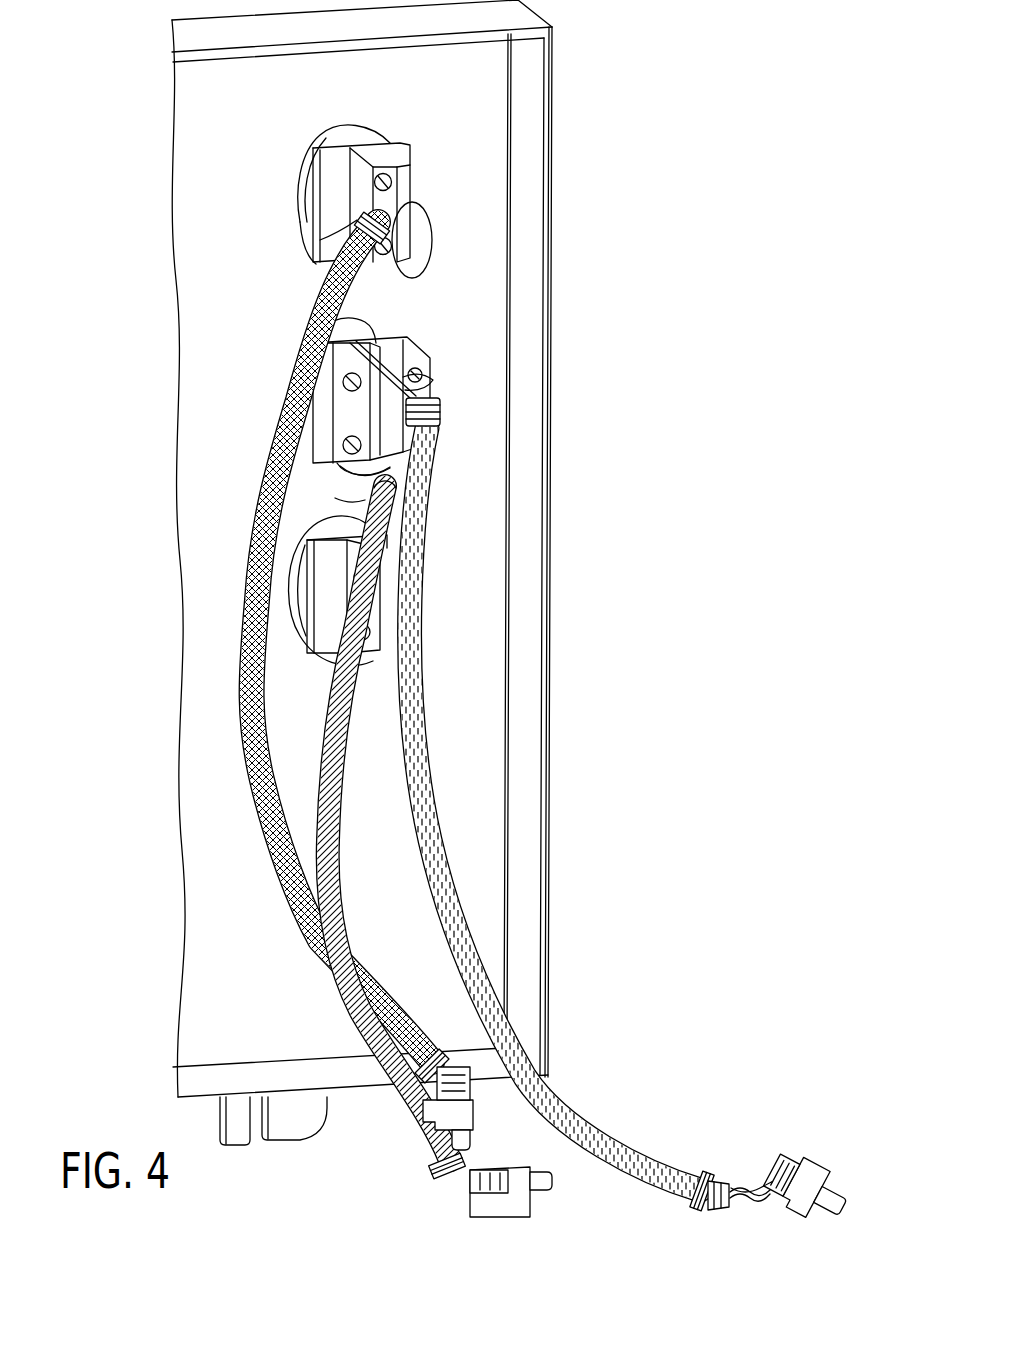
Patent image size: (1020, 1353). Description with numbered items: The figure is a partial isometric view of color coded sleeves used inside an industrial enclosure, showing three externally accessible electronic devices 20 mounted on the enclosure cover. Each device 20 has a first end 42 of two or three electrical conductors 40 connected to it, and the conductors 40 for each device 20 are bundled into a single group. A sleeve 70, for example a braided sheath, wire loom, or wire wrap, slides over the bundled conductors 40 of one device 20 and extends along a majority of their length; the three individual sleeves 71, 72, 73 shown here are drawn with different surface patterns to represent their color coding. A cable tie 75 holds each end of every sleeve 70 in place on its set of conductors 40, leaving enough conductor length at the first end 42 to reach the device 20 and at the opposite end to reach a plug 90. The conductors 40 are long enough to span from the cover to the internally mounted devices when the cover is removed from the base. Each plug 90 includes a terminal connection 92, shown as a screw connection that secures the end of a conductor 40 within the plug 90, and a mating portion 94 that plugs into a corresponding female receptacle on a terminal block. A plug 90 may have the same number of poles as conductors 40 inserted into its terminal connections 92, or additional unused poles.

The externally accessible electronic device 20 is at (347, 395).
The electrical conductor 40 is at (405, 197).
The first end 42 is at (384, 282).
The sleeve 70 is at (468, 706).
The first cable 71 is at (347, 847).
The second cable 72 is at (268, 697).
The third cable 73 is at (441, 758).
The cable tie 75 is at (352, 226).
The plug 90 is at (635, 1115).
The terminal connection 92 is at (456, 1057).
The mating portion 94 is at (485, 1141).